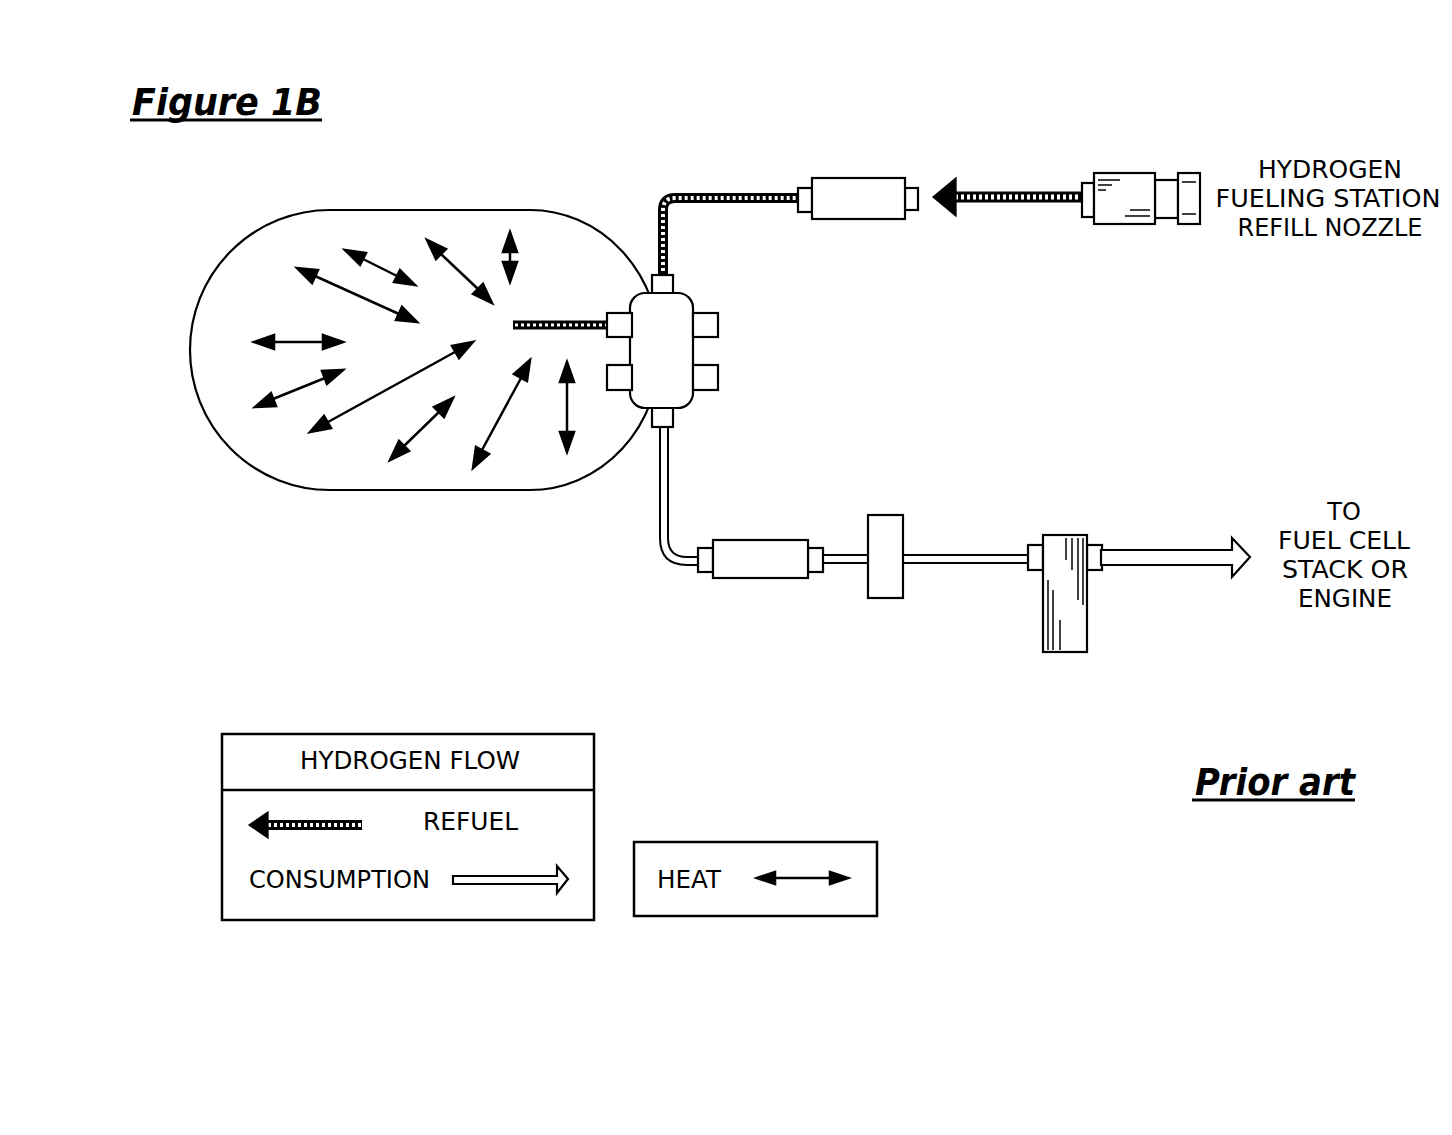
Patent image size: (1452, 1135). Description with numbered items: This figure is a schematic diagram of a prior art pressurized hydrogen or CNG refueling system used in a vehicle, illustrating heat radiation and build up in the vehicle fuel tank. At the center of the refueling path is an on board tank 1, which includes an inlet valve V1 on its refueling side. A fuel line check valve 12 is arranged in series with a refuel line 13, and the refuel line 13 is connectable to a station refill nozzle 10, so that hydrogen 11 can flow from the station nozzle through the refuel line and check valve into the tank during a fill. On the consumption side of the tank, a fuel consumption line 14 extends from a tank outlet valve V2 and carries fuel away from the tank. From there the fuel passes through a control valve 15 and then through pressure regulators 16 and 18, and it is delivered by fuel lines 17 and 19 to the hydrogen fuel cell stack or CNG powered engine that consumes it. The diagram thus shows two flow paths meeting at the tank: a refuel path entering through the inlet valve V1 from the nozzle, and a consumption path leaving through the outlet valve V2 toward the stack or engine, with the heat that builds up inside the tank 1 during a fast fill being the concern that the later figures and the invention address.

The on board tank 1 is at (210, 427).
The station refill nozzle 10 is at (1127, 224).
The hydrogen 11 is at (1008, 203).
The fuel line check valve 12 is at (858, 178).
The refuel line 13 is at (723, 196).
The fuel consumption line 14 is at (658, 543).
The control valve 15 is at (763, 578).
The pressure regulator 16 is at (886, 598).
The fuel line 17 is at (959, 554).
The pressure regulator 18 is at (1064, 652).
The fuel line 19 is at (1173, 549).
The inlet valve V1 is at (705, 313).
The tank outlet valve V2 is at (705, 390).